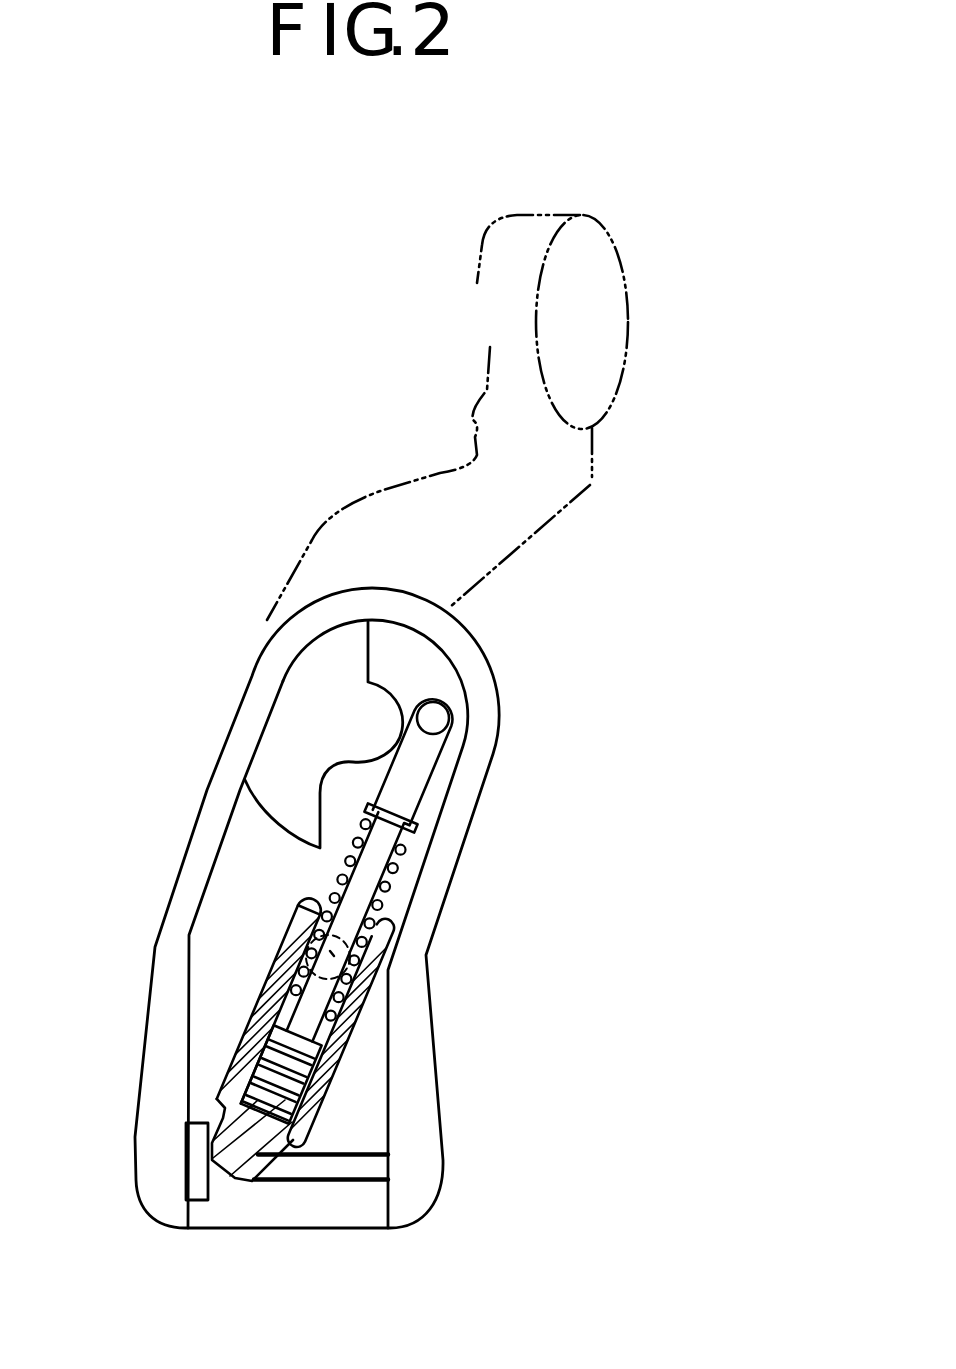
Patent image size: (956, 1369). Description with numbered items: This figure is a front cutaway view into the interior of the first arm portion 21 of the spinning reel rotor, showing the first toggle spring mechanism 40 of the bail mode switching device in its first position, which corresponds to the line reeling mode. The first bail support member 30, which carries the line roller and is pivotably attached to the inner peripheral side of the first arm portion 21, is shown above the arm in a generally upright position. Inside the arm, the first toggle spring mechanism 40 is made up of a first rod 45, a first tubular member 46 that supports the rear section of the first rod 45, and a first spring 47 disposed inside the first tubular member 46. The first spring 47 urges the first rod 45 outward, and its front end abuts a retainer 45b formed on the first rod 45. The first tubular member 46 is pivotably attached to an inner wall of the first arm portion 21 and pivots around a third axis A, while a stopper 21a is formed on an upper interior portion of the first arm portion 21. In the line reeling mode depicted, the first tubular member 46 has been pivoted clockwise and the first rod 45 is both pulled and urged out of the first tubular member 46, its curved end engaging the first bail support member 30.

The first bail support member 30 is at (578, 478).
The first arm portion 21 is at (485, 733).
The stopper 21a is at (325, 800).
The first rod 45 is at (413, 777).
The retainer 45b is at (410, 836).
The first spring 47 is at (397, 872).
The first tubular member 46 is at (363, 997).
The first toggle spring mechanism 40 is at (256, 904).
The third axis A is at (312, 968).